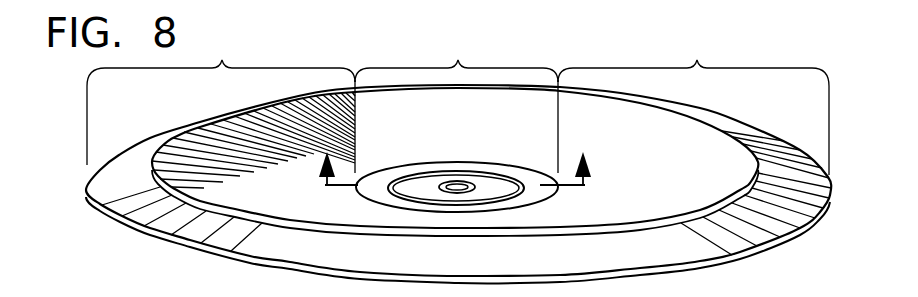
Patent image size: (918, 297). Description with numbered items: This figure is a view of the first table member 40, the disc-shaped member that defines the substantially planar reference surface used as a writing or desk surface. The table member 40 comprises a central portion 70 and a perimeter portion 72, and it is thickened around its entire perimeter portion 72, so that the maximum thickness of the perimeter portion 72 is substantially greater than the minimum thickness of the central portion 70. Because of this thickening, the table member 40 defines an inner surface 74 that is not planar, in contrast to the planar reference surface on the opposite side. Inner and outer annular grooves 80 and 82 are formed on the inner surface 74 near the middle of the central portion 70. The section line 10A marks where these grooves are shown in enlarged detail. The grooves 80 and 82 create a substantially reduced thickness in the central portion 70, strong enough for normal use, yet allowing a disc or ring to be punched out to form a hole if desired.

The first table member 40 is at (128, 252).
The central portion 70 is at (456, 102).
The perimeter portion 72 is at (458, 109).
The inner surface 74 is at (715, 243).
The inner annular groove 80 is at (455, 183).
The outer annular groove 82 is at (472, 172).
The section line for FIG. 10A is at (440, 162).